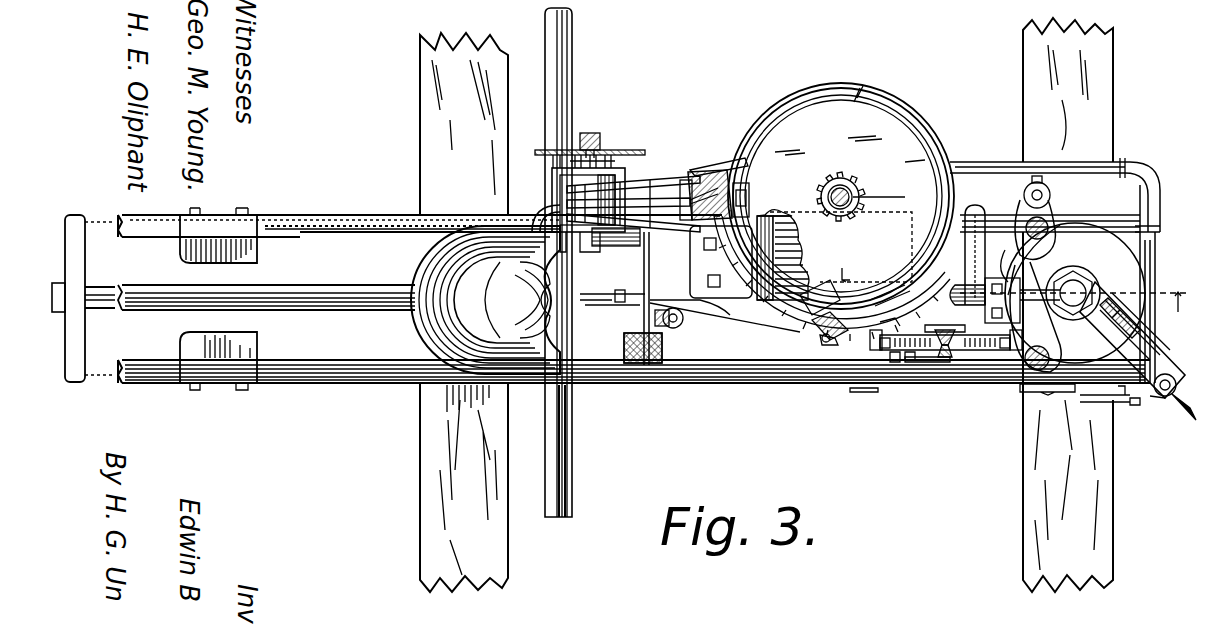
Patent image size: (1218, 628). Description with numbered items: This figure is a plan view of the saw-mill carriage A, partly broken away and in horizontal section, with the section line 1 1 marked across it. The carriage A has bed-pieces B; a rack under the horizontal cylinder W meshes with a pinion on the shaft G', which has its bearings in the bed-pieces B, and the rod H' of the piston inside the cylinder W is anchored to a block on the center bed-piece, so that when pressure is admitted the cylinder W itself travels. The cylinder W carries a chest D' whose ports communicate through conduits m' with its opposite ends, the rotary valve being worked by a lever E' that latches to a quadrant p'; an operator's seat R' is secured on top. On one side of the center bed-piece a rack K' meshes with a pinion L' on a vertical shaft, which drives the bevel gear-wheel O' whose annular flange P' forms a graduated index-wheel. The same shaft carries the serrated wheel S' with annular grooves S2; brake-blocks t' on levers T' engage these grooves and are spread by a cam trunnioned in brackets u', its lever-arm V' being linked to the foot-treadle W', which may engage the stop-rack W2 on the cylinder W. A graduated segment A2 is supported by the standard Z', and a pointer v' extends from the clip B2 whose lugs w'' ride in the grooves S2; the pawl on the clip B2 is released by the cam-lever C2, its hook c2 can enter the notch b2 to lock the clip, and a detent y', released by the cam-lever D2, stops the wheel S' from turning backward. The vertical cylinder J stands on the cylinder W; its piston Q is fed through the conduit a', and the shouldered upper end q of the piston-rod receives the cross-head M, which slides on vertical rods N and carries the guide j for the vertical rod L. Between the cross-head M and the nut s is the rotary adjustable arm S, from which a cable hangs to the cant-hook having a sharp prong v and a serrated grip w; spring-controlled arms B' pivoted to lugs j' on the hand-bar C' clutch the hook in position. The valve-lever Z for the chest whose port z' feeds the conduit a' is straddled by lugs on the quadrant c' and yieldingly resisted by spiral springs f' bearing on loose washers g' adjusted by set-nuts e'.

The saw-mill carriage A is at (478, 445).
The bed-pieces B is at (468, 398).
The shaft G' is at (573, 262).
The section line 1 is at (621, 295).
The vertical cylinder J is at (88, 263).
The rack K' is at (420, 224).
The piston-rod H' is at (250, 289).
The seat R' is at (485, 300).
The lever E' is at (594, 128).
The quadrant p' is at (591, 161).
The chest D' is at (572, 193).
The conduits m' is at (819, 261).
The levers T' is at (633, 186).
The brackets u' is at (688, 182).
The cam-lever D2 is at (708, 170).
The spring-controlled detent y' is at (719, 148).
The brake-blocks t' is at (753, 198).
The lugs w'' is at (695, 218).
The pointer v' is at (730, 283).
The lever-arm V' is at (591, 251).
The serrated grip w is at (878, 331).
The notch b2 is at (702, 240).
The stop-rack W2 is at (663, 305).
The horizontal cylinder W is at (672, 345).
The foot-treadle W' is at (612, 311).
The wheel S' is at (841, 196).
The annular grooves S2 is at (860, 98).
The vertical rod L is at (841, 184).
The cross-head M is at (957, 280).
The bevel gear-wheel O' is at (778, 201).
The annular flange P' is at (789, 258).
The piston Q is at (758, 262).
The clip B2 is at (828, 292).
The nut s is at (1098, 270).
The graduated segment A2 is at (910, 290).
The standard Z' is at (979, 244).
The guide j is at (1028, 192).
The pinion L' is at (1044, 218).
The vertical rods N is at (1035, 294).
The conduit a' is at (1004, 282).
The upper end of piston-rod q is at (1073, 293).
The rotary adjustable arm S is at (1132, 340).
The sharp prong v is at (1184, 414).
The lugs j' is at (1133, 418).
The spring-controlled arms B' is at (1105, 408).
The hand-bar C' is at (1047, 397).
The spiral springs f' is at (945, 375).
The loose washers g' is at (945, 332).
The set-nuts e' is at (936, 342).
The valve-lever Z is at (927, 388).
The quadrant c' is at (907, 384).
The port z' is at (851, 384).
The cam-lever C2 is at (880, 390).
The hook c2 is at (820, 345).